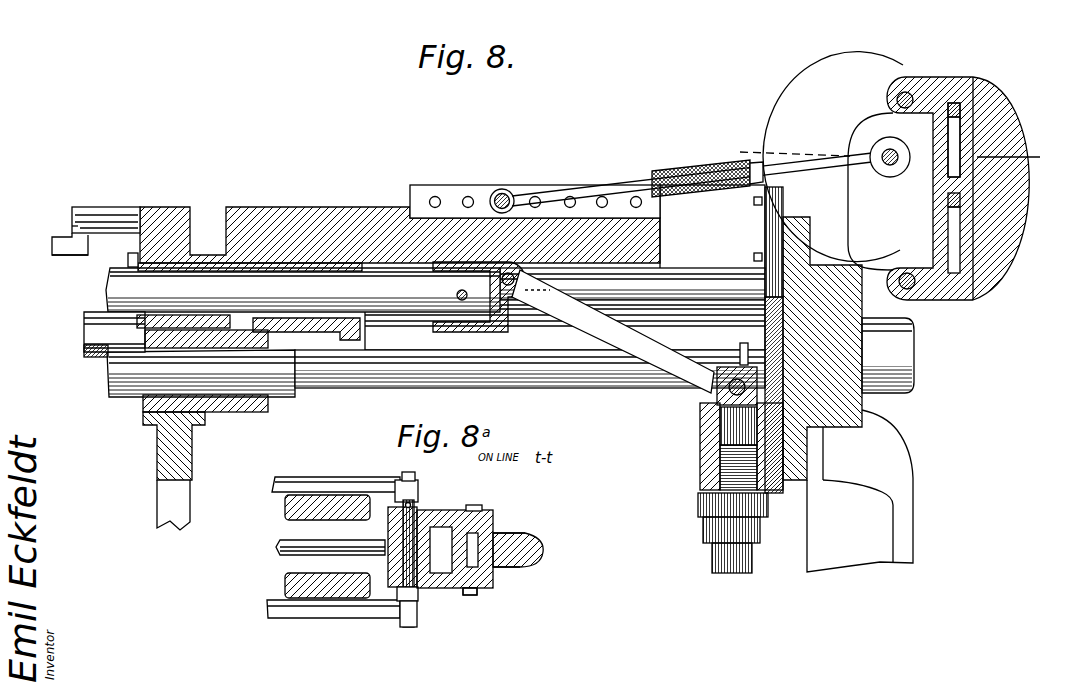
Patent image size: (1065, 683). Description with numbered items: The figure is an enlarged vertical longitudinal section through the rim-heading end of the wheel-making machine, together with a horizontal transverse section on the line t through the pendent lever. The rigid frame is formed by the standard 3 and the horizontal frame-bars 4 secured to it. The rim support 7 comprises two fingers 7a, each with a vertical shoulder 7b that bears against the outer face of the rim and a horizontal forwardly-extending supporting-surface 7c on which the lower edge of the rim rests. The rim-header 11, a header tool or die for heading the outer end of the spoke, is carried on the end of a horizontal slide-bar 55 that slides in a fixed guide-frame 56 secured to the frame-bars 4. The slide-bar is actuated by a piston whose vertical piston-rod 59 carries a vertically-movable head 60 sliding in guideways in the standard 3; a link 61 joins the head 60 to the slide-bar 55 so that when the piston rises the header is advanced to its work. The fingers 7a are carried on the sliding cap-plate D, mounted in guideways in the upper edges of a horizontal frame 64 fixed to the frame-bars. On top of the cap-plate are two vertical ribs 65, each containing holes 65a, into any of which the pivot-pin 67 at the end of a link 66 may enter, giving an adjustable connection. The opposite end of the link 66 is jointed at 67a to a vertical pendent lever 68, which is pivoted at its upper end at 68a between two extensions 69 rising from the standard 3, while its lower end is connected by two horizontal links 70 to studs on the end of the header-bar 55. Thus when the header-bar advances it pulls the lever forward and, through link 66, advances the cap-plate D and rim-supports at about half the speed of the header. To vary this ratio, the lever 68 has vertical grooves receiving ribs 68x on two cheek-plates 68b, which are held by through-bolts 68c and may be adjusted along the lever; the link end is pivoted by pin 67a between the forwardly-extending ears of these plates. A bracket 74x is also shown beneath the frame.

In FIG. 8, the standard 3 is at (860, 491).
In FIG. 8, the frame-bars 4 is at (103, 328).
In FIG. 8, the rim support 7 is at (69, 231).
In FIG. 8, the fingers 7a is at (100, 207).
In FIG. 8, the vertical shoulder or rest 7b is at (70, 227).
In FIG. 8, the horizontal supporting-surface 7c is at (52, 238).
In FIG. 8, the rim-header 11 is at (110, 220).
In FIG. 8, the sliding cap-plate D is at (363, 212).
In FIG. 8, the slide-bar 55 is at (303, 290).
In FIG. 8, the guide-frame 56 is at (357, 332).
In FIG. 8, the piston-rod 59 is at (714, 558).
In FIG. 8, the head 60 is at (767, 365).
In FIG. 8, the link 61 is at (595, 333).
In FIG. 8, the horizontal frame 64 is at (510, 348).
In FIG. 8, the vertical ribs 65 is at (450, 196).
In FIG. 8, the holes 65a is at (676, 210).
In FIG. 8, the link 66 is at (591, 191).
In FIG. 8A, the link 66 is at (280, 548).
In FIG. 8, the pivot-pin 67 is at (508, 192).
In FIG. 8, the pivot-pin 67a is at (888, 174).
In FIG. 8A, the pivot-pin 67a is at (432, 588).
In FIG. 8, the pendent lever 68 is at (938, 188).
In FIG. 8A, the pendent lever 68 is at (522, 543).
In FIG. 8, the pivot 68a is at (907, 78).
In FIG. 8, the cheek-plates 68b is at (936, 140).
In FIG. 8A, the cheek-plates 68b is at (442, 570).
In FIG. 8, the through-bolts 68c is at (970, 97).
In FIG. 8A, the through-bolts 68c is at (480, 594).
In FIG. 8A, the ribs 68x is at (490, 512).
In FIG. 8, the extensions 69 is at (833, 157).
In FIG. 8A, the extensions 69 is at (285, 508).
In FIG. 8, the horizontal links 70 is at (683, 278).
In FIG. 8A, the horizontal links 70 is at (318, 488).
In FIG. 8, the bracket 74x is at (192, 470).
In FIG. 8, the section line t is at (889, 154).